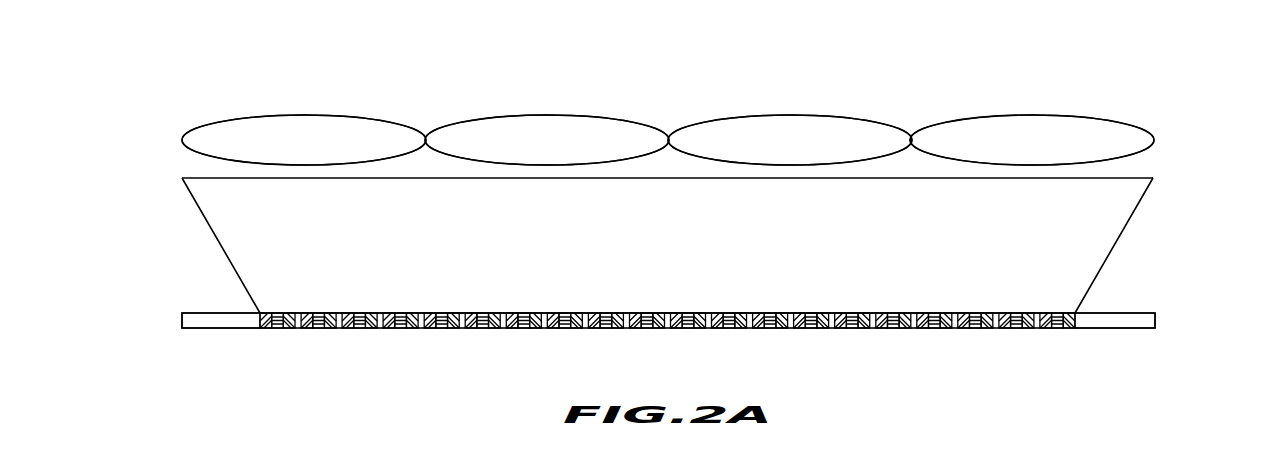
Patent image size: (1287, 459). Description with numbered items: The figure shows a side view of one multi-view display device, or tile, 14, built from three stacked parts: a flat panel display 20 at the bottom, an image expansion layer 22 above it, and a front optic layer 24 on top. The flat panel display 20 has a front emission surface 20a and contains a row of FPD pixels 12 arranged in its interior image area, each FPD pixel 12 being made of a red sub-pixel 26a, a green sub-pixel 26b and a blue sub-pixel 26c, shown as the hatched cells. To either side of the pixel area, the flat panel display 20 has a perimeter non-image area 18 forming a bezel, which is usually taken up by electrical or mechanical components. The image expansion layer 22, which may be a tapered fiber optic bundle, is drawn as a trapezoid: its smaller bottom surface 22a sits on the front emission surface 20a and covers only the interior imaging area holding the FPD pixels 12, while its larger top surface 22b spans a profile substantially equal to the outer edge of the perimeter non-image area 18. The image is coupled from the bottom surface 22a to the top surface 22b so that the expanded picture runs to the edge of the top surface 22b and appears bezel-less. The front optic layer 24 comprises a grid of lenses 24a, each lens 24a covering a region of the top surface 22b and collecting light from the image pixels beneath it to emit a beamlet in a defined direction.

The multi-view display device 14 is at (1191, 50).
The front optic layer 24 is at (1166, 133).
The lens 24a is at (305, 115).
The image expansion layer 22 is at (1114, 247).
The top surface 22b is at (671, 174).
The bottom surface 22a is at (673, 320).
The flat panel display 20 is at (1176, 325).
The front emission surface 20a is at (945, 312).
The perimeter non-image area 18 is at (215, 313).
The FPD pixel 12 is at (992, 333).
The red sub-pixel 26a is at (1046, 329).
The green sub-pixel 26b is at (1058, 329).
The blue sub-pixel 26c is at (1070, 329).